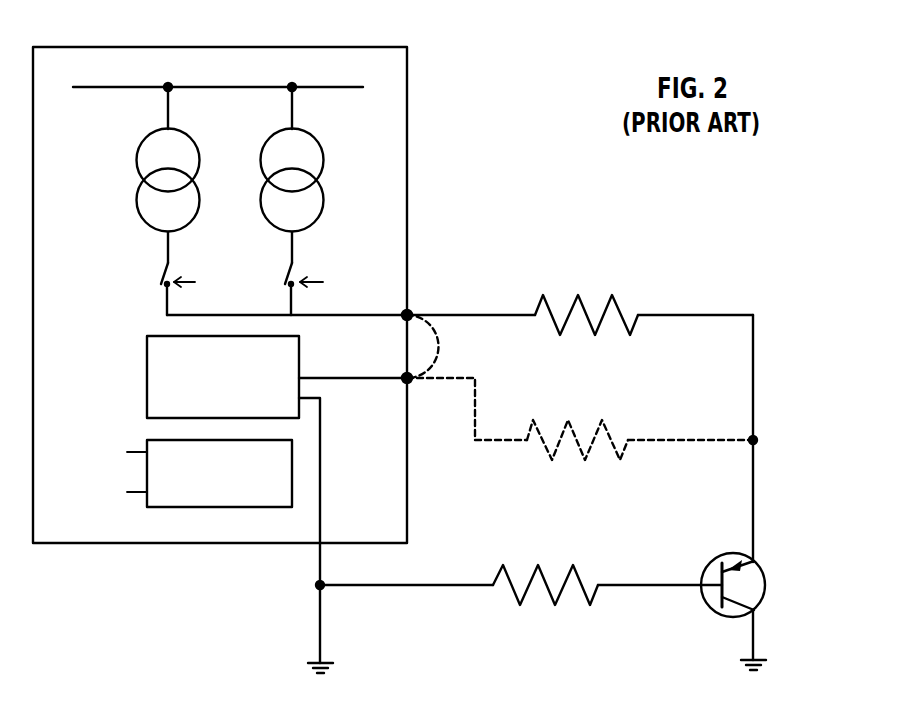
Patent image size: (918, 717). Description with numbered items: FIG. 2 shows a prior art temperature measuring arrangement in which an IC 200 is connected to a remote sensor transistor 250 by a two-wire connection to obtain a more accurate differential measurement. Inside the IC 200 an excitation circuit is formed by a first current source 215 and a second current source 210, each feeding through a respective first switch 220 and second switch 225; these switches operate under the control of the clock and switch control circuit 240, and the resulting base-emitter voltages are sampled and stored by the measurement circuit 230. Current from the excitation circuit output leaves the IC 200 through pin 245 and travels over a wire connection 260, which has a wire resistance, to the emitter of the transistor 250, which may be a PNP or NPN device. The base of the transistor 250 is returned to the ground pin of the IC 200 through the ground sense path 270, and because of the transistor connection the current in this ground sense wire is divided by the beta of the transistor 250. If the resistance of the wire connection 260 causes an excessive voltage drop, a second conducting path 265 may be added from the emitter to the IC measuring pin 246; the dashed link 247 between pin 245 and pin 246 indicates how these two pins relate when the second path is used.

The IC 200 is at (220, 271).
The current source I2 210 is at (315, 171).
The current source I1 215 is at (176, 167).
The switch S1 220 is at (146, 270).
The switch S2 225 is at (314, 270).
The measurement circuit 230 is at (168, 377).
The clock and switch control circuit 240 is at (187, 508).
The pin 245 is at (453, 299).
The second node / pin 246 is at (451, 428).
The connection between pins 247 is at (462, 346).
The transistor 250 is at (766, 567).
The wire connection 260 is at (620, 296).
The second conducting path 265 is at (577, 459).
The ground sense path 270 is at (572, 567).